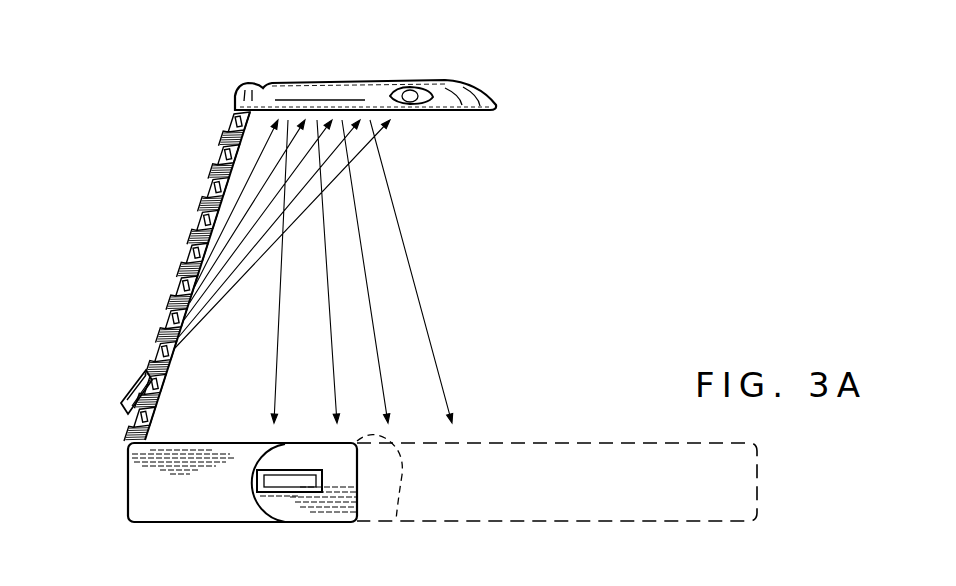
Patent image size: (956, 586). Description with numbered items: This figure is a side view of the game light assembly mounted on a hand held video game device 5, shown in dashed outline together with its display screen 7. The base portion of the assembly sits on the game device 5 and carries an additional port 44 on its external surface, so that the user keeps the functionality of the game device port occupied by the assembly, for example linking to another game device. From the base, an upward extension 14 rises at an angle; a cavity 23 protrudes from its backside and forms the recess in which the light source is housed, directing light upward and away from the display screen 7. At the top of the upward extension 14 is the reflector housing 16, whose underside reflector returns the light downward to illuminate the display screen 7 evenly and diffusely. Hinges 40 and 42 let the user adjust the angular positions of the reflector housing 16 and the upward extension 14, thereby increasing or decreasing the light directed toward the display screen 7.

The hand held video game device 5 is at (648, 497).
The display screen 7 is at (396, 520).
The upward extension 14 is at (194, 228).
The reflector housing 16 is at (373, 86).
The cavity 23 is at (142, 380).
The hinge 40 is at (238, 103).
The hinge 42 is at (129, 443).
The additional port 44 is at (273, 484).